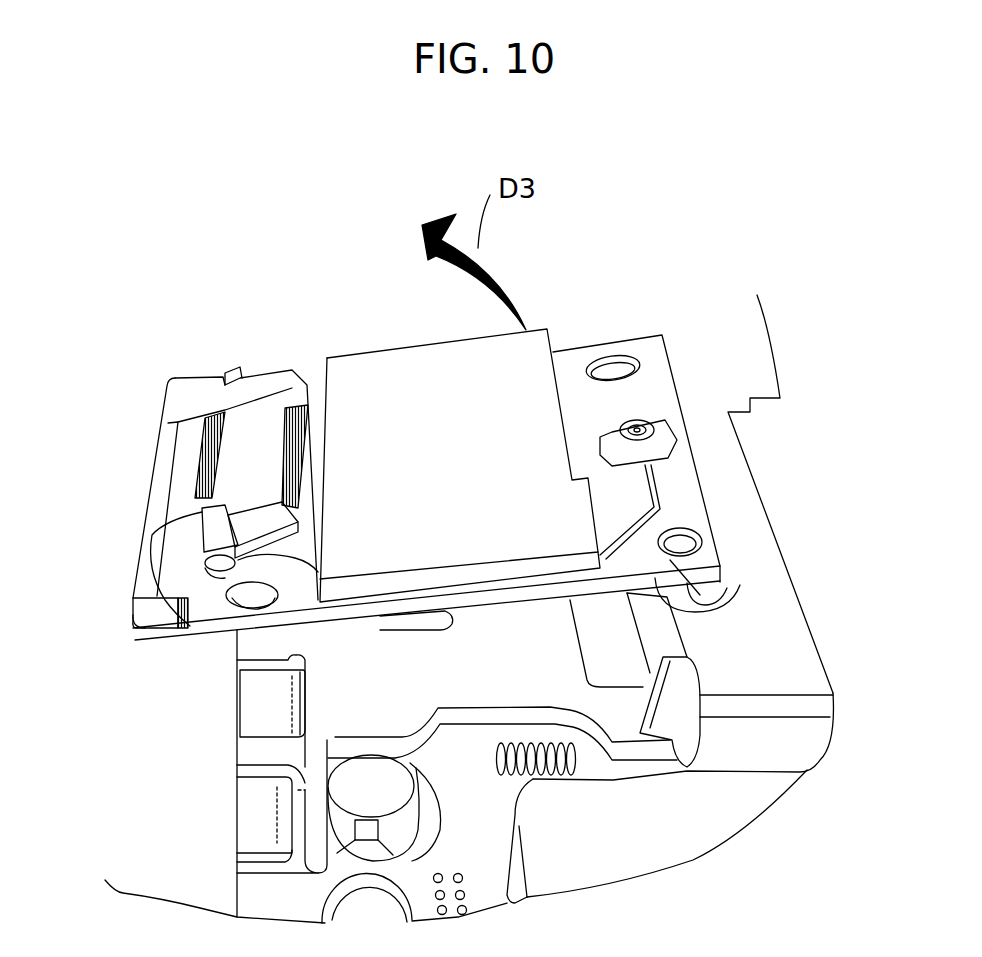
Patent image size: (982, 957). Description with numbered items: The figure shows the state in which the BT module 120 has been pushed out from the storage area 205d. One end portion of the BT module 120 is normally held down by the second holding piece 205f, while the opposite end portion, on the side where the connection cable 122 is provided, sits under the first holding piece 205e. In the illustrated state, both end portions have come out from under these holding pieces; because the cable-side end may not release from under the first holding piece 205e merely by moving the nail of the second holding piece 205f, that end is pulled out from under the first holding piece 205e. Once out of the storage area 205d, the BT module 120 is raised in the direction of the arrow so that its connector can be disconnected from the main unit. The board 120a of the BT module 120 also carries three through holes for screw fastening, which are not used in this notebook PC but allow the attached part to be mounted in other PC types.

The BT module 120 is at (568, 338).
The board 120a is at (707, 358).
The connection cable 122 is at (160, 482).
The storage area 205d is at (181, 398).
The first holding piece 205e is at (147, 613).
The second holding piece 205f is at (705, 596).